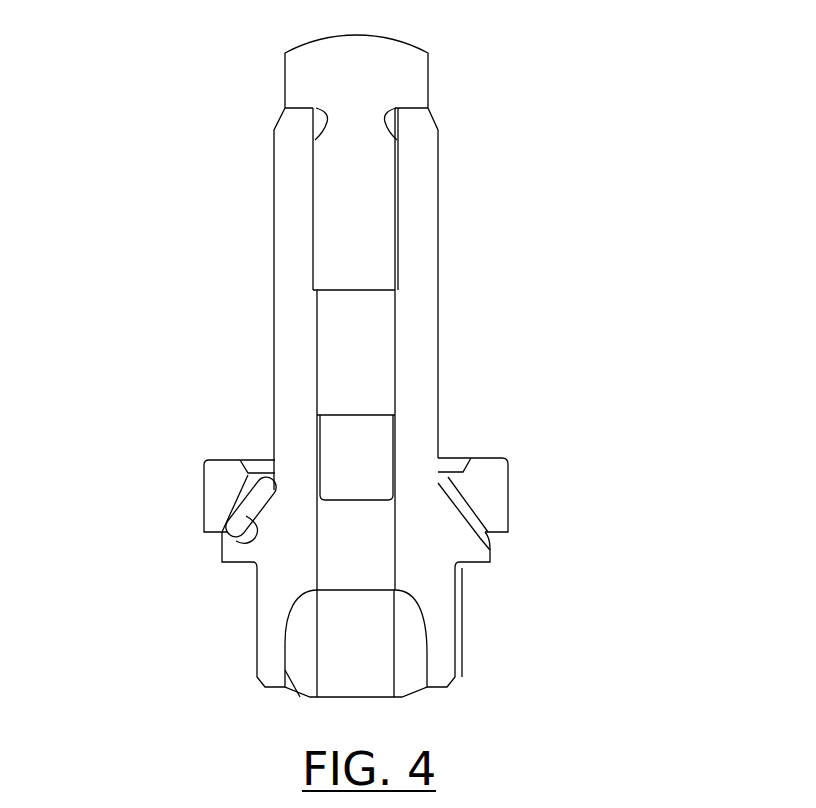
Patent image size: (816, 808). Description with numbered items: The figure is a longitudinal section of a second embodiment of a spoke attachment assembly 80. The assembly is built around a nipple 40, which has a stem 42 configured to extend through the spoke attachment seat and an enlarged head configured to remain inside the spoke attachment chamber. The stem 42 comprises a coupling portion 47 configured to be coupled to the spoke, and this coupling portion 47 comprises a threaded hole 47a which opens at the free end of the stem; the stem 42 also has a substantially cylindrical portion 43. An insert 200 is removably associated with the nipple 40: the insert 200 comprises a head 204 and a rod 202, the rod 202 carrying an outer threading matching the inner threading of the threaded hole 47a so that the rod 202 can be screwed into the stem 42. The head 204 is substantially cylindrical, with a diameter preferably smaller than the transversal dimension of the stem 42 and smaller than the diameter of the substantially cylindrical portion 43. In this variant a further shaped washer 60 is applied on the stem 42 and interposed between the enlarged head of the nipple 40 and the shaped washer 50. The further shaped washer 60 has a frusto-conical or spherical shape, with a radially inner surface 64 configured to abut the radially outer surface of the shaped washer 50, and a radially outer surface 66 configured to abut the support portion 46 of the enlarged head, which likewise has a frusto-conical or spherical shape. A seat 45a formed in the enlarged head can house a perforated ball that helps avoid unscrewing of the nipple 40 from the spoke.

The spoke attachment assembly 80 is at (374, 414).
The insert 200 is at (298, 365).
The head 204 is at (330, 71).
The rod 202 is at (298, 402).
The coupling portion 47 is at (398, 335).
The threaded hole 47a is at (312, 364).
The stem 42 is at (497, 299).
The substantially cylindrical portion 43 is at (527, 283).
The shaped washer 50 is at (154, 459).
The radially inner frusto-conical or spherical surface 64 is at (240, 503).
The radially outer frusto-conical or spherical surface 66 is at (225, 528).
The further shaped washer 60 is at (465, 512).
The support portion 46 is at (227, 557).
The nipple 40 is at (264, 652).
The seat 45a is at (312, 687).